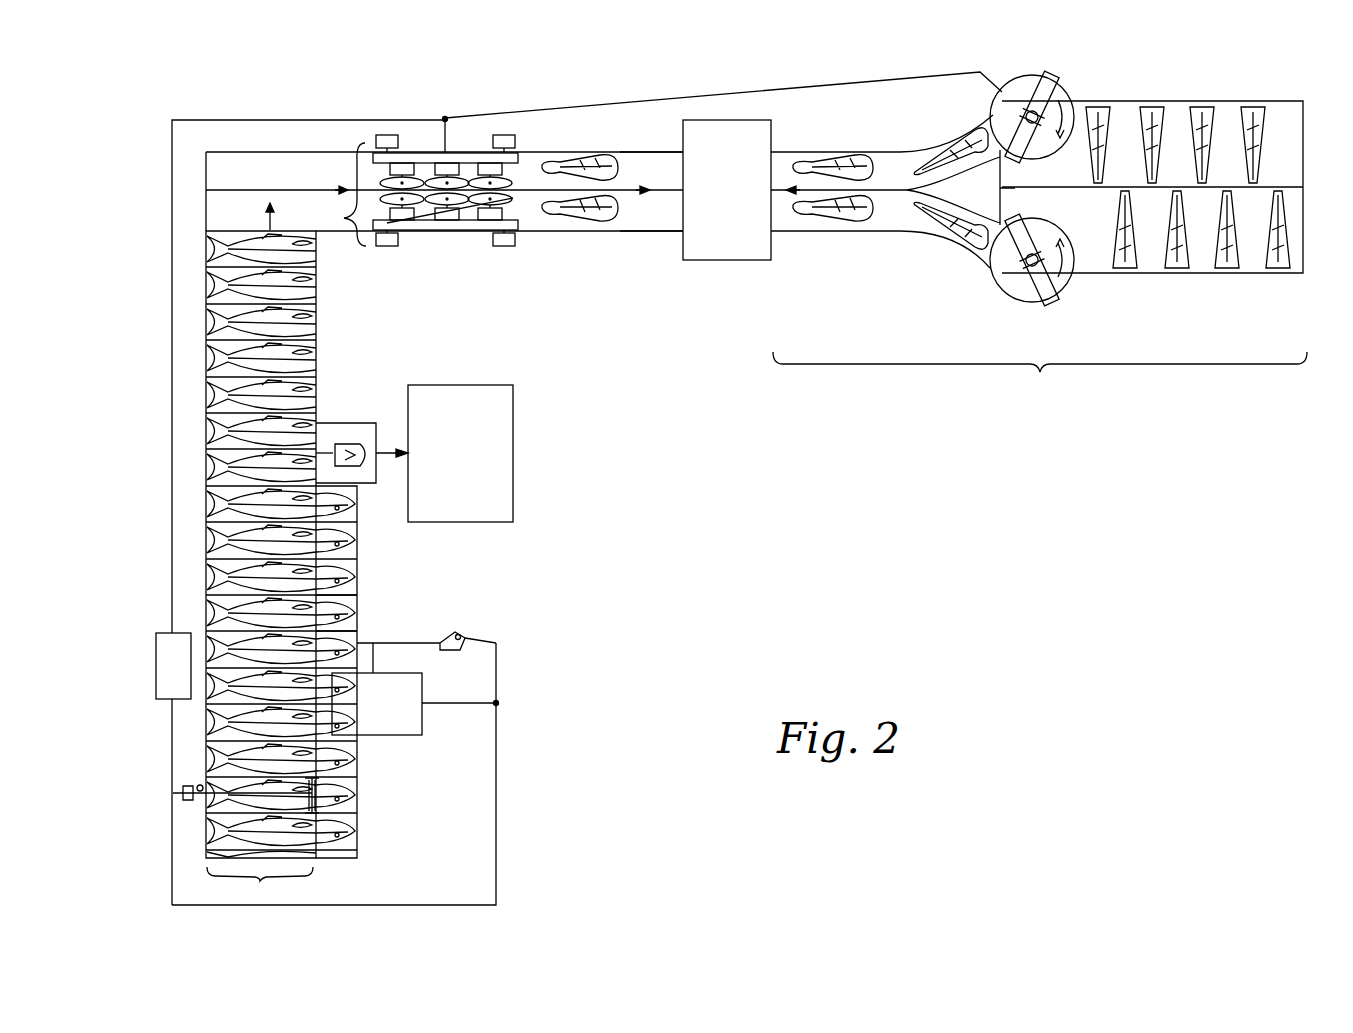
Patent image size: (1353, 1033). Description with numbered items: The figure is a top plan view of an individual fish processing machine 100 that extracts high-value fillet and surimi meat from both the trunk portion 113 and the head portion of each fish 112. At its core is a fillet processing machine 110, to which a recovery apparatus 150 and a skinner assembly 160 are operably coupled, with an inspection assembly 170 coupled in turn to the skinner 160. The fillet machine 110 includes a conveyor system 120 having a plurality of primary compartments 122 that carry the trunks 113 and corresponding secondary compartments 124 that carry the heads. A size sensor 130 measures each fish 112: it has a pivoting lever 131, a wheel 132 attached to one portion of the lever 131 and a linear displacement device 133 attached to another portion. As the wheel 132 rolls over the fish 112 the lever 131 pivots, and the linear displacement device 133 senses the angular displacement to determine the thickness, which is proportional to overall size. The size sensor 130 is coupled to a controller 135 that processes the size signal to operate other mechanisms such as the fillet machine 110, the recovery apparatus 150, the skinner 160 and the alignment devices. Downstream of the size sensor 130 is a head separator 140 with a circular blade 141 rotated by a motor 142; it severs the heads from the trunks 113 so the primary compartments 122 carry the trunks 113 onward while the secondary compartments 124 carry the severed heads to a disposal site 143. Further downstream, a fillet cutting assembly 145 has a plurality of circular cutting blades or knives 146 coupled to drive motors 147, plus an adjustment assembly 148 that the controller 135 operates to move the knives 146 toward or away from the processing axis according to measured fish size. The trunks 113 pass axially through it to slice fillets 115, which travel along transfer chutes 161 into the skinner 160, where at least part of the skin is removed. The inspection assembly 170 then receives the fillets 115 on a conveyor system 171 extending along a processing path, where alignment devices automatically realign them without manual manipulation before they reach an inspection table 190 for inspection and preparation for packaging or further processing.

The fish processing machine 100 is at (216, 95).
The fillet processing machine 110 is at (196, 173).
The fish 112 is at (320, 867).
The trunk portion 113 is at (262, 882).
The fillet 115 is at (593, 177).
The conveyor system 120 is at (210, 544).
The primary compartment 122 is at (232, 450).
The secondary compartment 124 is at (356, 632).
The size sensor 130 is at (211, 788).
The pivoting lever 131 is at (350, 762).
The wheel 132 is at (357, 797).
The linear displacement device 133 is at (192, 808).
The controller 135 is at (150, 642).
The head separator 140 is at (440, 714).
The circular blade 141 is at (332, 720).
The motor 142 is at (425, 693).
The disposal site 143 is at (372, 415).
The fillet cutting assembly 145 is at (446, 228).
The circular cutting blade 146 is at (404, 220).
The drive motor 147 is at (470, 208).
The adjustment assembly 148 is at (518, 228).
The recovery apparatus 150 is at (477, 457).
The skinner assembly 160 is at (748, 199).
The transfer chute 161 is at (645, 149).
The inspection assembly 170 is at (1054, 241).
The conveyor system 171 is at (888, 142).
The inspection table 190 is at (1290, 101).